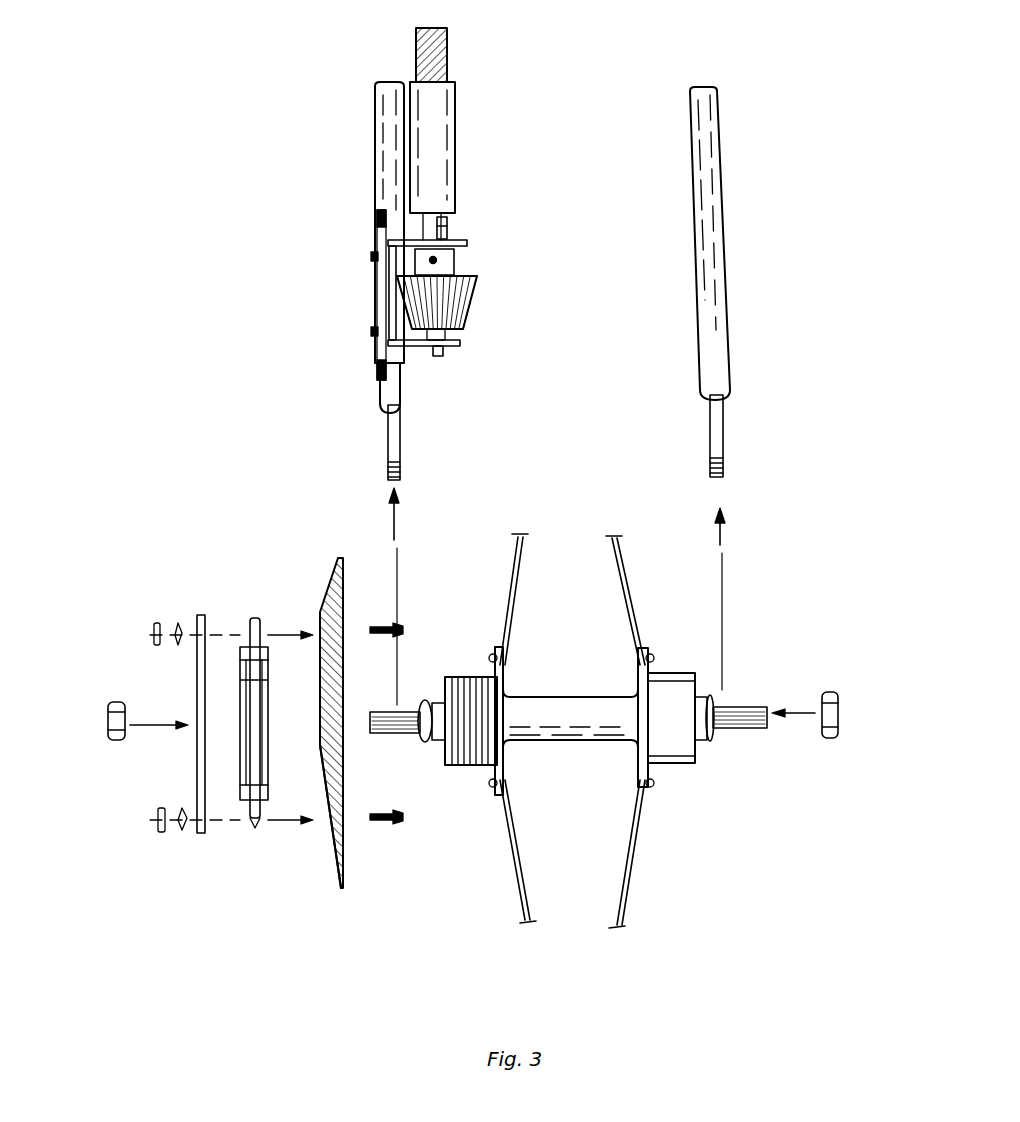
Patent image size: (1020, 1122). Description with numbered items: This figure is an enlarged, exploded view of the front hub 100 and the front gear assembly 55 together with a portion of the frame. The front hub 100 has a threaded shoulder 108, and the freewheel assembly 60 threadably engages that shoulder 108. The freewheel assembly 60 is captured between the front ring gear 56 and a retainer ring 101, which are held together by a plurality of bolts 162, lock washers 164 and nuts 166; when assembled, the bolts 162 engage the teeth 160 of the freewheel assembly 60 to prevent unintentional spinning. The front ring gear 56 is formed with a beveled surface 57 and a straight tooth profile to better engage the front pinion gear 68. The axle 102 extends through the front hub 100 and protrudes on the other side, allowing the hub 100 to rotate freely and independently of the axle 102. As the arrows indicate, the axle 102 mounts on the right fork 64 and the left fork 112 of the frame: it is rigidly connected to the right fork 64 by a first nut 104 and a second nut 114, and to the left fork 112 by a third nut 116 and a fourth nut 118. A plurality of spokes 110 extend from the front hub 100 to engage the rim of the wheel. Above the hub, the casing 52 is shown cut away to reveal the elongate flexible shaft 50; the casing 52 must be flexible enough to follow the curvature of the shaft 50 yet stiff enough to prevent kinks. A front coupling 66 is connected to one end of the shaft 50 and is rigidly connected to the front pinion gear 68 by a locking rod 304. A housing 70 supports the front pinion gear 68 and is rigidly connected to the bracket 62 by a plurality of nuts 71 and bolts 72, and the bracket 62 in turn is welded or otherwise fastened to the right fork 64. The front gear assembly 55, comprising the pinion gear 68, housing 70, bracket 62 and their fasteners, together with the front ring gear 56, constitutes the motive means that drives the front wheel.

The elongate flexible shaft 50 is at (440, 45).
The casing 52 is at (440, 112).
The front gear assembly 55 is at (300, 237).
The front ring gear 56 is at (342, 885).
The beveled surface 57 is at (331, 845).
The freewheel assembly 60 is at (245, 780).
The bracket 62 is at (380, 218).
The right fork 64 is at (385, 147).
The front coupling 66 is at (445, 225).
The front pinion gear 68 is at (440, 305).
The housing 70 is at (467, 243).
The nuts 71 is at (373, 325).
The bolts 72 is at (372, 258).
The front hub 100 is at (568, 710).
The retainer ring 101 is at (205, 840).
The axle 102 is at (395, 735).
The first nut 104 is at (110, 740).
The threaded shoulder 108 is at (480, 765).
The spokes 110 is at (625, 872).
The left fork 112 is at (710, 208).
The second nut 114 is at (425, 700).
The third nut 116 is at (710, 740).
The fourth nut 118 is at (835, 740).
The teeth 160 is at (253, 620).
The bolts 162 is at (397, 625).
The lock washers 164 is at (178, 625).
The nuts 166 is at (157, 628).
The locking rod 304 is at (437, 260).